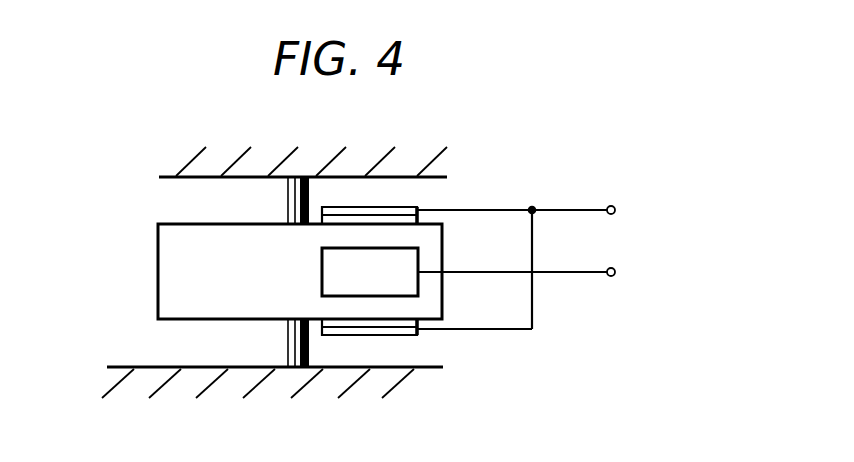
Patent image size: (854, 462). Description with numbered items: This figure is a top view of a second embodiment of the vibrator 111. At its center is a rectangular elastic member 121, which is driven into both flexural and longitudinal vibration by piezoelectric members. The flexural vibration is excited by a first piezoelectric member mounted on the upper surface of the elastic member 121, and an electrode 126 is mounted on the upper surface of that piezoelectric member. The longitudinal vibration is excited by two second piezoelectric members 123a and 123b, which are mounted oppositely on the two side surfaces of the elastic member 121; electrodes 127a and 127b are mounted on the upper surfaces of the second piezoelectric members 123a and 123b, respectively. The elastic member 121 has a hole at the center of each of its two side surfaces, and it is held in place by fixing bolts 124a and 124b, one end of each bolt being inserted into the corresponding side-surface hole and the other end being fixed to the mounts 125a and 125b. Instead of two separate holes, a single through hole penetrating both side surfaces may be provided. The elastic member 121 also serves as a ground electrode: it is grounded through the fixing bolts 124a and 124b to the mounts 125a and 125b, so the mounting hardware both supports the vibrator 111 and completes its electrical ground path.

The vibrator 111 is at (148, 150).
The elastic member 121 is at (443, 240).
The second piezoelectric member 123a is at (418, 330).
The second piezoelectric member 123b is at (418, 222).
The fixing bolt 124a is at (292, 343).
The fixing bolt 124b is at (298, 177).
The mount 125a is at (368, 379).
The mount 125b is at (375, 177).
The electrode 126 is at (337, 270).
The electrode 127a is at (422, 333).
The electrode 127b is at (403, 218).